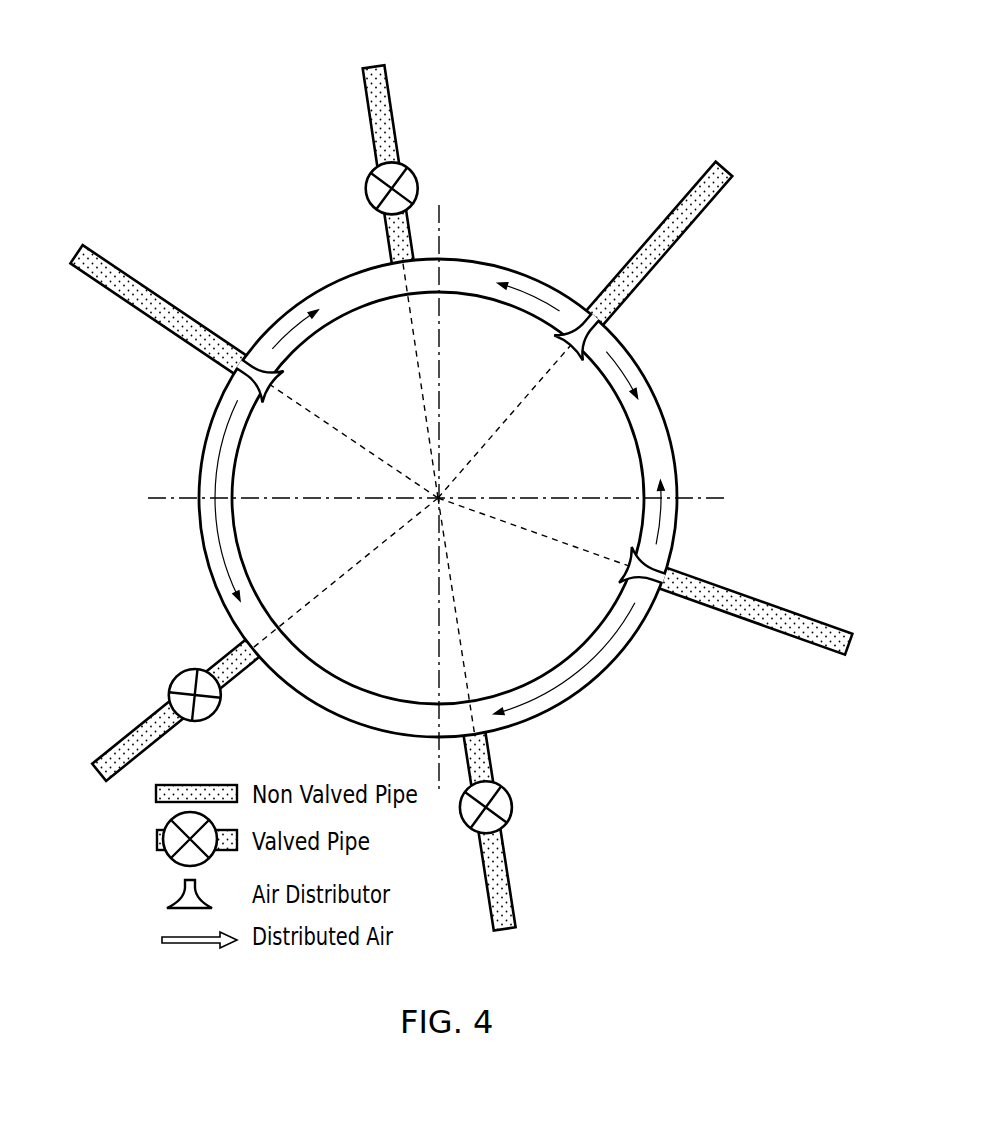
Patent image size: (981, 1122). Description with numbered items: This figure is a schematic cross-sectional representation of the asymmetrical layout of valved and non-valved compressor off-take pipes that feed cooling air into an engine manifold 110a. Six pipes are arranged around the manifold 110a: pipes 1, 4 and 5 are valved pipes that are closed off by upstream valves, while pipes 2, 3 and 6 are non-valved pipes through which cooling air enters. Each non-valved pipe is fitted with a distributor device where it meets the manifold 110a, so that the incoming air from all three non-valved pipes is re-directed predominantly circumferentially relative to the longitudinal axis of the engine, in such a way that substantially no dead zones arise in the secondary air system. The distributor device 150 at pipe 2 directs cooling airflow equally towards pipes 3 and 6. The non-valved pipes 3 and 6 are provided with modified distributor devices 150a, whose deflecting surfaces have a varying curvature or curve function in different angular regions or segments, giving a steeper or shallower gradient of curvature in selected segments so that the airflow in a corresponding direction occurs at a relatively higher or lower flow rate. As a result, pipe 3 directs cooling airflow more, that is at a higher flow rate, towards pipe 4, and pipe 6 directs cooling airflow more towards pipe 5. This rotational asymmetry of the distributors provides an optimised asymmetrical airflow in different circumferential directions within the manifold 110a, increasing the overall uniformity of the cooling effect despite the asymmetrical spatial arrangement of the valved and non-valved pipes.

The compressor off-take pipe 1 is at (388, 146).
The non-valved compressor off-take pipe 2 is at (664, 231).
The non-valved compressor off-take pipe 3 is at (768, 617).
The compressor off-take pipe 4 is at (488, 851).
The compressor off-take pipe 5 is at (165, 720).
The non-valved compressor off-take pipe 6 is at (149, 302).
The distributor device 150 is at (577, 322).
The modified distributor device 150a is at (670, 571).
The engine manifold 110a is at (548, 720).